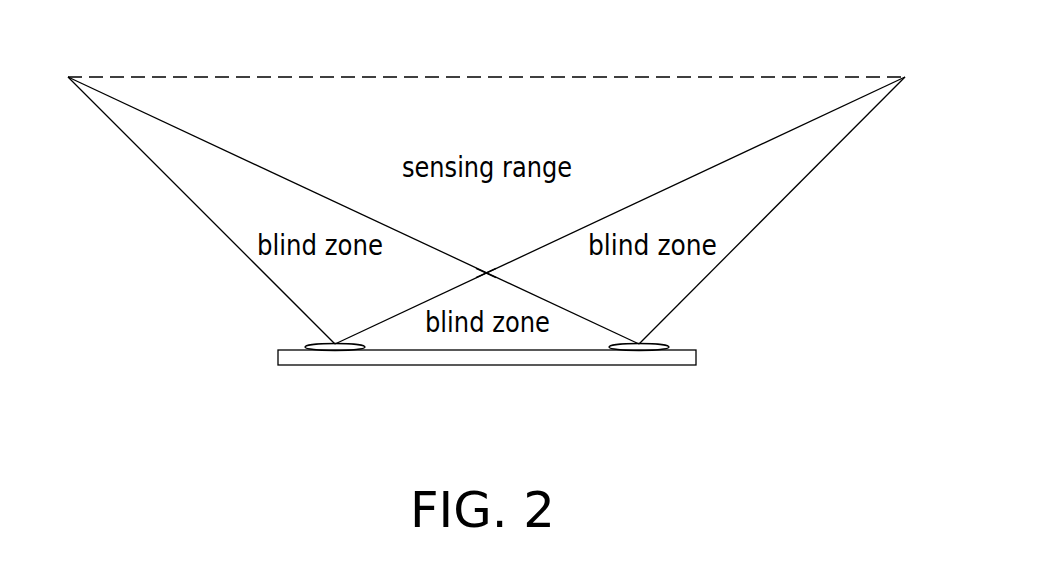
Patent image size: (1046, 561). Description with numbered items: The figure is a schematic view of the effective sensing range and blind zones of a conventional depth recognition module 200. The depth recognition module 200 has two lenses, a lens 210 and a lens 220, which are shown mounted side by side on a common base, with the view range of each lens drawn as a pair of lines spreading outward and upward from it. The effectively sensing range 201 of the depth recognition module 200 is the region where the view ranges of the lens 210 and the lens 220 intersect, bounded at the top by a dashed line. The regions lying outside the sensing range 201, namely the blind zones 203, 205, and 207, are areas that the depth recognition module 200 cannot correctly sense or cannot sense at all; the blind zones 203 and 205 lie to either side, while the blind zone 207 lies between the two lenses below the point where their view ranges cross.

The depth recognition module 200 is at (845, 509).
The sensing range 201 is at (489, 92).
The blind zone 203 is at (258, 179).
The blind zone 205 is at (696, 186).
The blind zone 207 is at (486, 278).
The lens 210 is at (335, 350).
The lens 220 is at (639, 350).